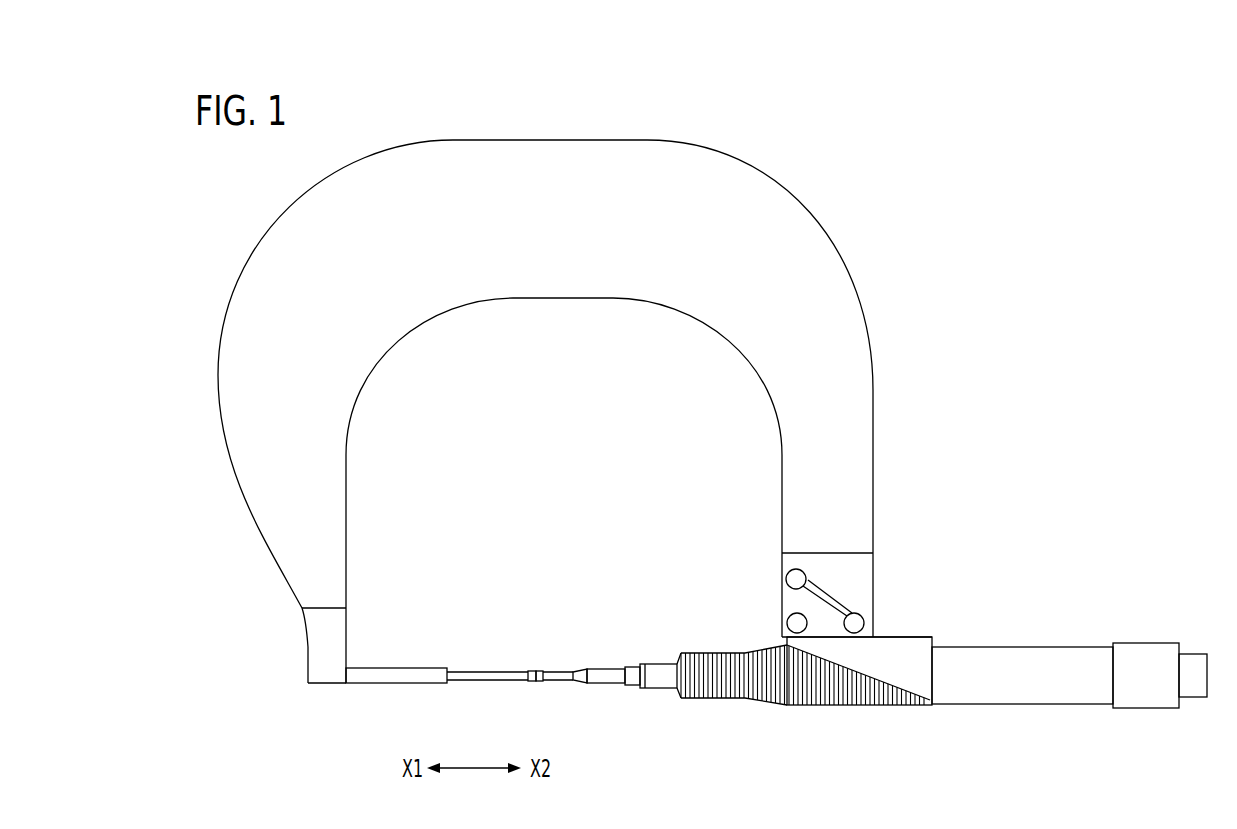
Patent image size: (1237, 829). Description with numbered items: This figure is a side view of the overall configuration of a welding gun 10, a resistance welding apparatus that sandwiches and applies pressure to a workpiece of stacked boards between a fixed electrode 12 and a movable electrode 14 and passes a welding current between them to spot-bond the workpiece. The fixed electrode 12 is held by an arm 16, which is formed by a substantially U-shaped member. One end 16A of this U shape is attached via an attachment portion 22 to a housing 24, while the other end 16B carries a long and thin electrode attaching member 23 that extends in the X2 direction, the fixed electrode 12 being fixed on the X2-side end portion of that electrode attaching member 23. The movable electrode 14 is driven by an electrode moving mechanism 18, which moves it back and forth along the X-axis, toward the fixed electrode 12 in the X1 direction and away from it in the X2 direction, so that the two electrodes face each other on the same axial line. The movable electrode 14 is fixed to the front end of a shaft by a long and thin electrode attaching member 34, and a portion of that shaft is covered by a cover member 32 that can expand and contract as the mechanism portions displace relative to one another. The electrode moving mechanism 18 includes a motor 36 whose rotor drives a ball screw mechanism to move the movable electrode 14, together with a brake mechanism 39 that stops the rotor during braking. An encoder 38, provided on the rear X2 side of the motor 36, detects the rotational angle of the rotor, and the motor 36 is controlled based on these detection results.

The welding gun 10 is at (914, 254).
The fixed electrode 12 is at (530, 671).
The movable electrode 14 is at (543, 671).
The arm 16 is at (822, 232).
The one end of the arm 16A is at (875, 522).
The other end of the arm 16B is at (305, 636).
The electrode moving mechanism 18 is at (1088, 616).
The attachment portion 22 is at (778, 571).
The electrode attaching member 23 is at (385, 668).
The housing 24 is at (999, 693).
The cover member 32 is at (717, 705).
The electrode attaching member 34 is at (604, 687).
The motor 36 is at (1165, 695).
The encoder 38 is at (1199, 695).
The brake mechanism 39 is at (1127, 695).